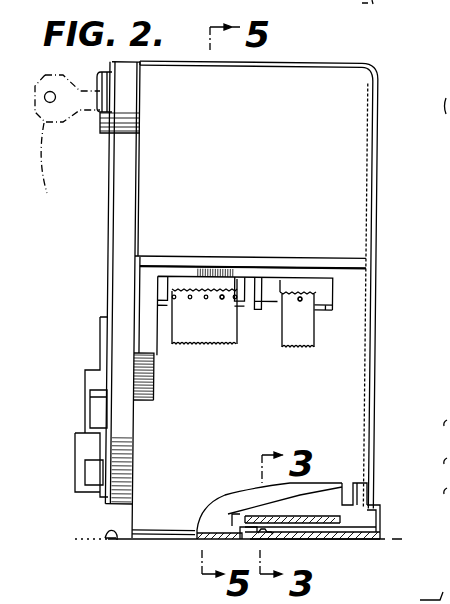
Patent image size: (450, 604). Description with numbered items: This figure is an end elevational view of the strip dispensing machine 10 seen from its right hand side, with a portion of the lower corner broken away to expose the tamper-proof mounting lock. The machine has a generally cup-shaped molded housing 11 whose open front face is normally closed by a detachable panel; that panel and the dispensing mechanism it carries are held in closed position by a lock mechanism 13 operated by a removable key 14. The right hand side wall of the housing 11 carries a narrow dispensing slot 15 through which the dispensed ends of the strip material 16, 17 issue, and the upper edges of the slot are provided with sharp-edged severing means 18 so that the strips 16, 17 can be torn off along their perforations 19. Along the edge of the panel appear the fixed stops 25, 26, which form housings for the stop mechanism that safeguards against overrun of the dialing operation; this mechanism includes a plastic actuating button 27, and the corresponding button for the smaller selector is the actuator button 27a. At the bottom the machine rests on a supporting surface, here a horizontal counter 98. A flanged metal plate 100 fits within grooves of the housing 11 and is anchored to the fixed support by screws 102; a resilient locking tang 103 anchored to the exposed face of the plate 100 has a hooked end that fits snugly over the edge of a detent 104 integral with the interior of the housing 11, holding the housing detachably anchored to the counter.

The strip dispensing machine 10 is at (86, 264).
The housing 11 is at (387, 214).
The lock mechanism 13 is at (98, 122).
The removable key 14 is at (67, 136).
The dispensing slot 15 is at (335, 300).
The strip material 16 is at (198, 330).
The strip material 17 is at (300, 345).
The sharp-edged severing means 18 is at (290, 287).
The perforations 19 is at (222, 302).
The stop 25 is at (78, 462).
The stop 26 is at (85, 385).
The actuating button 27 is at (92, 472).
The actuator button 27a is at (92, 410).
The horizontal counter 98 is at (105, 538).
The metal plate 100 is at (333, 541).
The screws 102 is at (266, 538).
The resilient locking tang 103 is at (300, 516).
The detent 104 is at (262, 516).